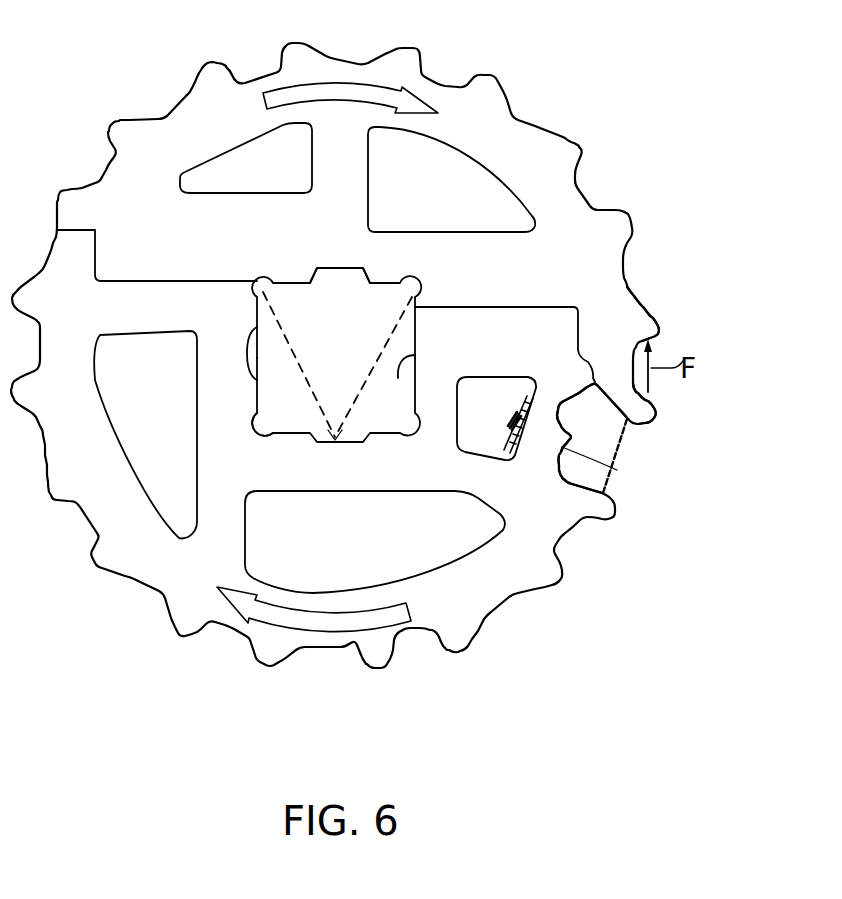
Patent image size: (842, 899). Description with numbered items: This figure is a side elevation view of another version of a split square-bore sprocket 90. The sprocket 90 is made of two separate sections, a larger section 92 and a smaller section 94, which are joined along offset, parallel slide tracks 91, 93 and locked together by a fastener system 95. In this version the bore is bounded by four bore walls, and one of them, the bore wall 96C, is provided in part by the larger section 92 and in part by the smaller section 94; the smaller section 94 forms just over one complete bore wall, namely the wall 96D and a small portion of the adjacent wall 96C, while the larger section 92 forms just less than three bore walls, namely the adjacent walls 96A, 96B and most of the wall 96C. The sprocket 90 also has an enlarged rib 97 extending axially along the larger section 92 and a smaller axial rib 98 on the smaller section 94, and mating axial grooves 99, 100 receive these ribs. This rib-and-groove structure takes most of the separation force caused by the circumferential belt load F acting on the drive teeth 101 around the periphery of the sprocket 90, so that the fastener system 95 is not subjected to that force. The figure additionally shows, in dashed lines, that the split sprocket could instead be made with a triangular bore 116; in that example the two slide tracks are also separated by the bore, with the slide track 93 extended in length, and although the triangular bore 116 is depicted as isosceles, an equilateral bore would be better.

The sprocket 90 is at (102, 62).
The slide track 91 is at (155, 280).
The larger section 92 is at (350, 487).
The slide track 93 is at (536, 306).
The smaller section 94 is at (327, 253).
The fastener system 95 is at (590, 370).
The bore wall 96A is at (267, 353).
The bore wall 96B is at (322, 442).
The bore wall 96C is at (392, 383).
The bore wall 96D is at (330, 268).
The enlarged rib 97 is at (593, 360).
The smaller axial rib 98 is at (577, 403).
The axial groove 99 is at (632, 424).
The axial groove 100 is at (617, 470).
The drive teeth 101 is at (660, 324).
The triangular bore 116 is at (280, 328).